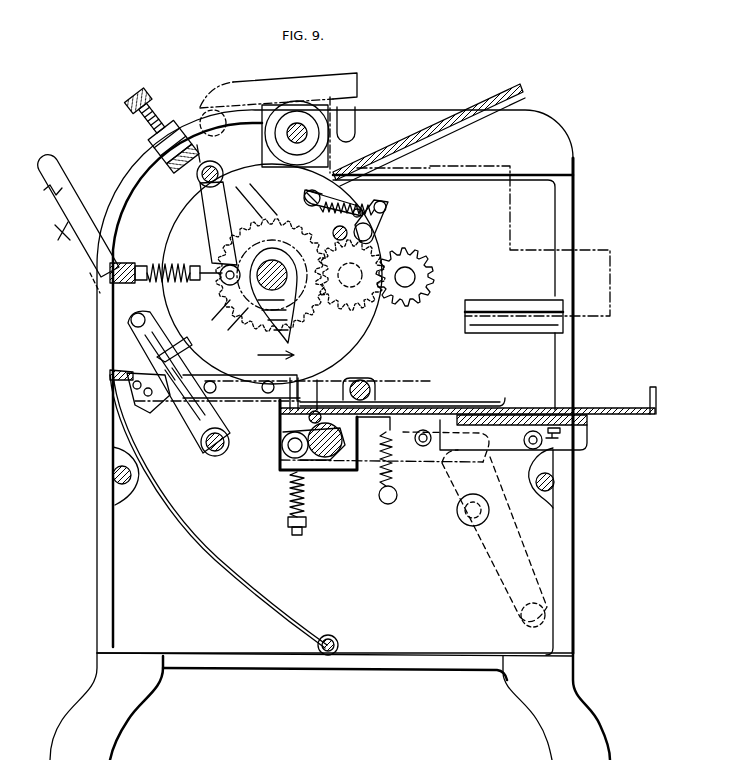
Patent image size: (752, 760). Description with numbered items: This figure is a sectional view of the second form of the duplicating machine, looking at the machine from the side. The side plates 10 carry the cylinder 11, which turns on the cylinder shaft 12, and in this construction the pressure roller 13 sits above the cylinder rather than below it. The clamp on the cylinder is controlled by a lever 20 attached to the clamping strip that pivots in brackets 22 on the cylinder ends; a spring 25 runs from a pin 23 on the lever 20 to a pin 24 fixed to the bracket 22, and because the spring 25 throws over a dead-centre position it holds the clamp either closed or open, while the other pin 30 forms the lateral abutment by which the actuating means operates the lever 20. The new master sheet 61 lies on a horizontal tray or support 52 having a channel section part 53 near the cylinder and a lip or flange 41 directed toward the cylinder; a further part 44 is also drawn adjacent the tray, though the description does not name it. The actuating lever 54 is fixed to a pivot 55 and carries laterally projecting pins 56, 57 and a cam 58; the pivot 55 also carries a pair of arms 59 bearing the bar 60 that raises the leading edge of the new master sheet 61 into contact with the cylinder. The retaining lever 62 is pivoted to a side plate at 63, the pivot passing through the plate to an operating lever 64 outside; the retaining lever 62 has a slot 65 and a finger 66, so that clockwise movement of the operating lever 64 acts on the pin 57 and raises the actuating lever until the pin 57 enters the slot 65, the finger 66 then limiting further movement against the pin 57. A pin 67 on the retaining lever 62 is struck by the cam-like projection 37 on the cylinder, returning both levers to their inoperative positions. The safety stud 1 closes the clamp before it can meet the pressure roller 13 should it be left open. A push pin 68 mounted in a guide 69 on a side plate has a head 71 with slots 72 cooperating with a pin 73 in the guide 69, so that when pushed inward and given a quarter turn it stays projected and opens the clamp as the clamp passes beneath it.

The safety stud 1 is at (334, 232).
The side plates 10 is at (530, 225).
The cylinder 11 is at (185, 237).
The cylinder shaft 12 is at (273, 260).
The pressure roller 13 is at (299, 125).
The lever 20 is at (375, 224).
The brackets 22 is at (318, 200).
The pin 23 is at (386, 205).
The pin 24 is at (312, 191).
The spring 25 is at (330, 215).
The pin 30 is at (372, 234).
The cam-like projection 37 is at (290, 320).
The lip or flange 41 is at (296, 380).
The plate 44 is at (453, 403).
The tray or support 52 is at (436, 448).
The channel section part 53 is at (322, 471).
The actuating lever 54 is at (163, 402).
The pivot 55 is at (373, 388).
The pin 56 is at (266, 383).
The pin 57 is at (212, 380).
The cam 58 is at (112, 378).
The arms 59 is at (337, 400).
The bar 60 is at (317, 382).
The new master sheet 61 is at (402, 408).
The retaining lever 62 is at (197, 410).
The pivot 63 is at (215, 451).
The operating lever 64 is at (78, 238).
The slot 65 is at (165, 350).
The finger 66 is at (170, 350).
The pin 67 is at (131, 320).
The push pin 68 is at (150, 97).
The guide 69 is at (167, 120).
The head 71 is at (196, 150).
The slots 72 is at (174, 162).
The pin 73 is at (208, 223).